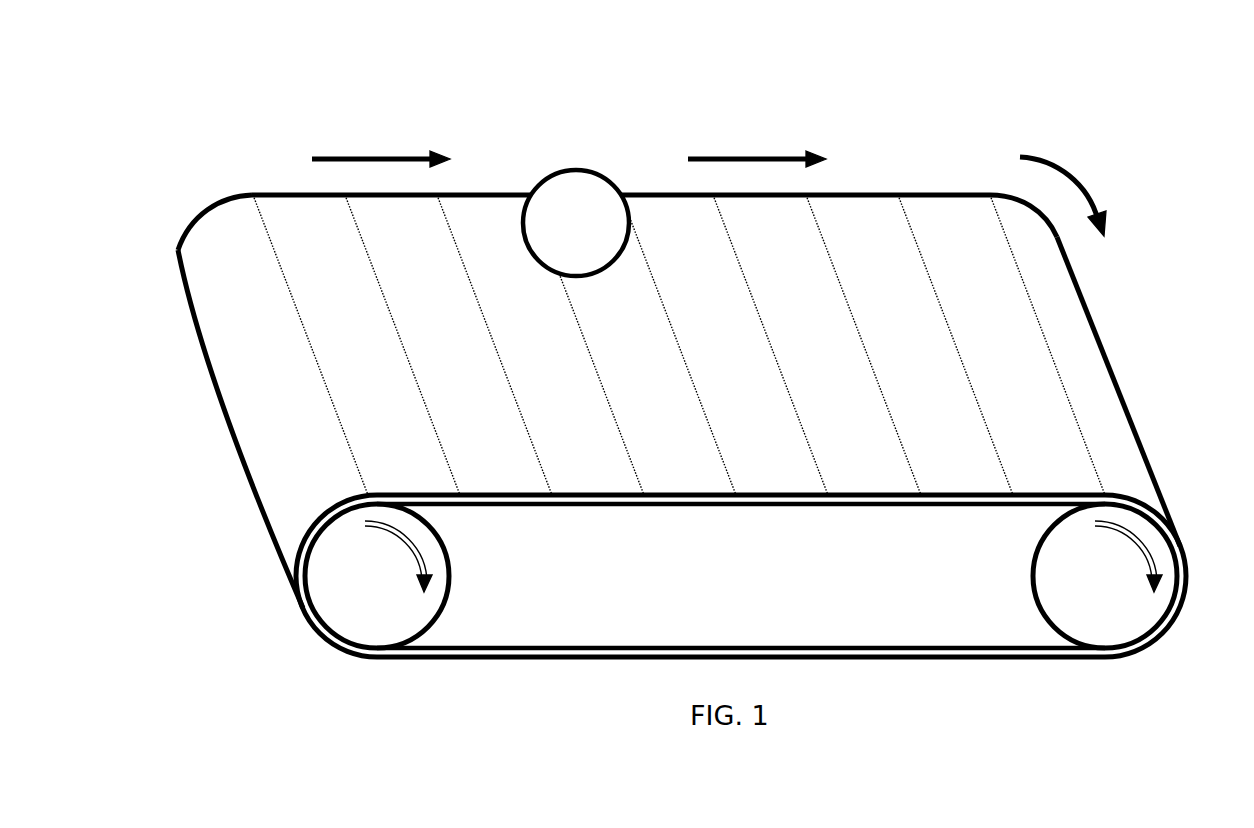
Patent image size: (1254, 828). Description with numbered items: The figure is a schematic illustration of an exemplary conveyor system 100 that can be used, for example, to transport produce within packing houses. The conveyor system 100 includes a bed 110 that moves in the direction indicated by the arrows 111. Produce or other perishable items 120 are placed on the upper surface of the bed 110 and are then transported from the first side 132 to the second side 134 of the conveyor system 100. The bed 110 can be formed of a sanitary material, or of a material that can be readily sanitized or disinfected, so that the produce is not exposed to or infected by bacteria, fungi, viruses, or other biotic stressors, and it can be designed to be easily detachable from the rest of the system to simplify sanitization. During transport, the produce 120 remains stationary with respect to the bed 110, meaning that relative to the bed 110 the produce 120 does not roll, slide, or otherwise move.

The conveyor system 100 is at (668, 335).
The bed 110 is at (222, 226).
The arrows 111 is at (382, 153).
The produce 120 is at (568, 185).
The first side 132 is at (215, 428).
The second side 134 is at (1125, 345).